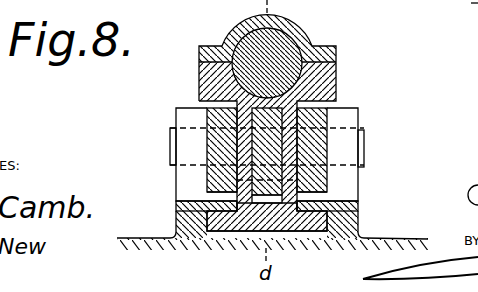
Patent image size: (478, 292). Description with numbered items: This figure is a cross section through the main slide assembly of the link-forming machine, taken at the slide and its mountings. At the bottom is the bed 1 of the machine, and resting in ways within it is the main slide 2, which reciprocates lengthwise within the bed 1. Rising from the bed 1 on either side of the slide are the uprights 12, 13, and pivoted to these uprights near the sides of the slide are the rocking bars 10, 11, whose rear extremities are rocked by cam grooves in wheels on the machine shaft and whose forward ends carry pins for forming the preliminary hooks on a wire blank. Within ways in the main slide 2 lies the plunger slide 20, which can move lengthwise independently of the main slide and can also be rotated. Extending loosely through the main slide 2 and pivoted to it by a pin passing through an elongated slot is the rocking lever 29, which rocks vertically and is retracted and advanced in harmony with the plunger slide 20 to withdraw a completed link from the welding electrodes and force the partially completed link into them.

The bed 1 is at (356, 227).
The main slide 2 is at (337, 78).
The rocking bar 10 is at (215, 143).
The rocking bar 11 is at (330, 123).
The upright 12 is at (193, 115).
The upright 13 is at (348, 143).
The plunger slide 20 is at (291, 50).
The rocking lever 29 is at (330, 182).